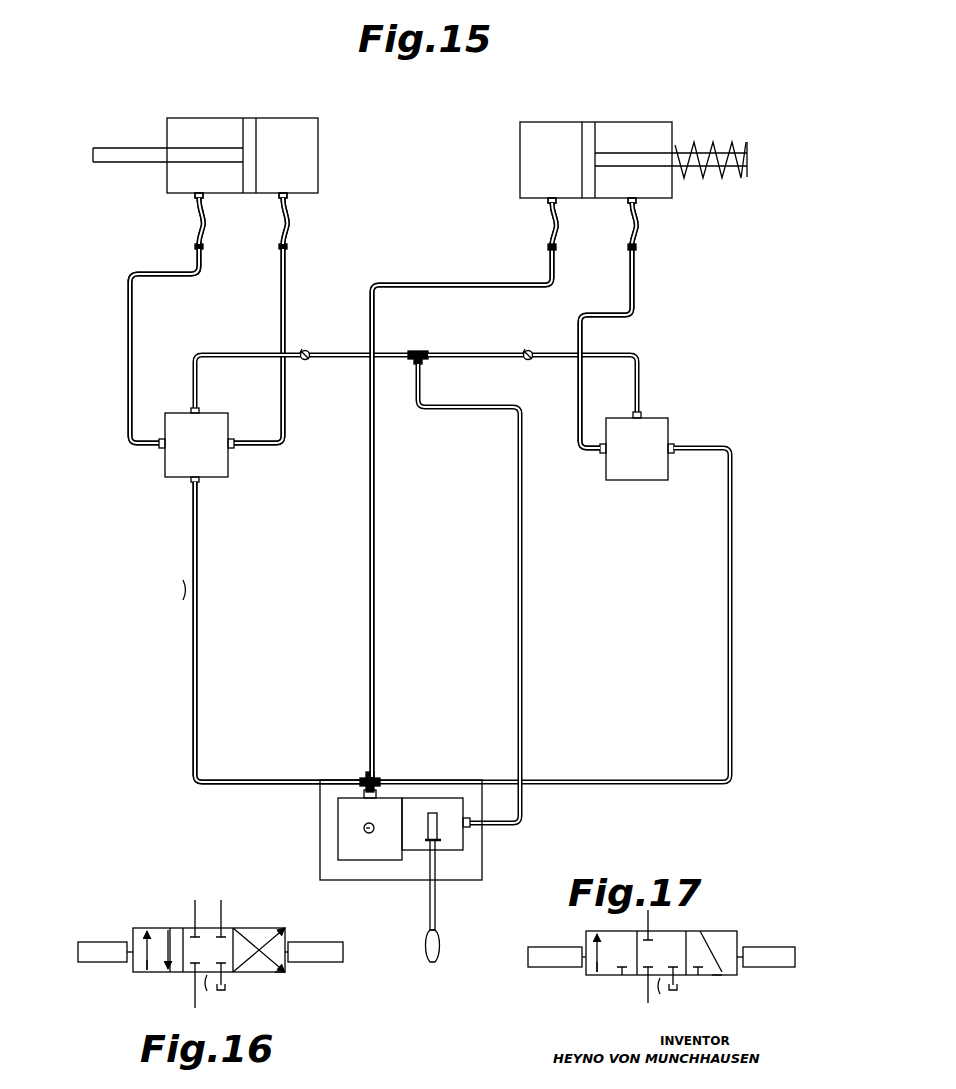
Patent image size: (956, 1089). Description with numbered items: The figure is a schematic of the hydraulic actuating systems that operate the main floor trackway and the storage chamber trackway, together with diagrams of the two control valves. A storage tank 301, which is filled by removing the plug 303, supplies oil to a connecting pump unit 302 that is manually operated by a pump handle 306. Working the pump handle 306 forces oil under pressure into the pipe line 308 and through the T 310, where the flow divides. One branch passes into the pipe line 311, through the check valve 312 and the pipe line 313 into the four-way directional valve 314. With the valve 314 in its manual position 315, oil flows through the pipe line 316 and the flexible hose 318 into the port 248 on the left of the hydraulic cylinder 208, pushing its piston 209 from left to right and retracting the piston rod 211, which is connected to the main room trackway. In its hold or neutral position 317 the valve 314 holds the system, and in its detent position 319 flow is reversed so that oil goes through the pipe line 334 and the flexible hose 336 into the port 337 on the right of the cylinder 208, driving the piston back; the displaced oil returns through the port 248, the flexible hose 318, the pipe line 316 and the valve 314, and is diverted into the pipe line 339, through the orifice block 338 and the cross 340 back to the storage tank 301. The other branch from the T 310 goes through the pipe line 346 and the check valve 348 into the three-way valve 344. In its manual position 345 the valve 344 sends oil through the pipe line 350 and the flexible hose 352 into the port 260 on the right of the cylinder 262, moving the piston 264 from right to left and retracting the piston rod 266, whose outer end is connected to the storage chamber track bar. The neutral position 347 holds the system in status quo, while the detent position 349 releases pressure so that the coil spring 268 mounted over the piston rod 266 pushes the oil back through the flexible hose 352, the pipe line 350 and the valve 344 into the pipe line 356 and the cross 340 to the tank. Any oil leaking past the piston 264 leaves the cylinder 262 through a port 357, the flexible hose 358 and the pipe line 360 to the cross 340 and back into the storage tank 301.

In FIG. 15, the hydraulic cylinder 208 is at (277, 117).
In FIG. 15, the piston 209 is at (256, 141).
In FIG. 15, the piston rod 211 is at (139, 147).
In FIG. 15, the port 248 is at (192, 197).
In FIG. 15, the port 337 is at (290, 198).
In FIG. 15, the flexible hose 318 is at (194, 226).
In FIG. 15, the flexible hose 336 is at (288, 228).
In FIG. 15, the pipe line 334 is at (287, 294).
In FIG. 15, the pipe line 316 is at (127, 351).
In FIG. 15, the pipe line 313 is at (246, 351).
In FIG. 15, the pipe line 311 is at (348, 352).
In FIG. 15, the check valve 312 is at (308, 360).
In FIG. 15, the four-way directional valve 314 is at (212, 450).
In FIG. 16, the four-way directional valve 314 is at (154, 927).
In FIG. 15, the T 310 is at (417, 350).
In FIG. 15, the pipe line 346 is at (467, 351).
In FIG. 15, the check valve 348 is at (530, 360).
In FIG. 15, the pipe line 360 is at (420, 283).
In FIG. 15, the pipe line 350 is at (635, 300).
In FIG. 15, the three-way valve 344 is at (652, 451).
In FIG. 17, the three-way valve 344 is at (708, 930).
In FIG. 15, the pipe line 356 is at (733, 564).
In FIG. 15, the pipe line 308 is at (523, 590).
In FIG. 15, the orifice block 338 is at (199, 590).
In FIG. 15, the pipe line 339 is at (199, 526).
In FIG. 15, the cross 340 is at (374, 777).
In FIG. 15, the storage tank 301 is at (337, 812).
In FIG. 15, the plug 303 is at (364, 828).
In FIG. 15, the pump unit 302 is at (455, 838).
In FIG. 15, the pump handle 306 is at (437, 906).
In FIG. 15, the cylinder 262 is at (619, 121).
In FIG. 15, the piston 264 is at (582, 143).
In FIG. 15, the coil spring 268 is at (677, 151).
In FIG. 15, the piston rod 266 is at (727, 151).
In FIG. 15, the port 357 is at (548, 200).
In FIG. 15, the port 260 is at (630, 201).
In FIG. 15, the flexible hose 358 is at (550, 228).
In FIG. 15, the flexible hose 352 is at (637, 228).
In FIG. 16, the detent position 319 is at (156, 970).
In FIG. 16, the neutral position 317 is at (221, 990).
In FIG. 16, the manual position 315 is at (274, 972).
In FIG. 17, the manual position 345 is at (614, 974).
In FIG. 17, the neutral position 347 is at (673, 990).
In FIG. 17, the detent position 349 is at (714, 975).